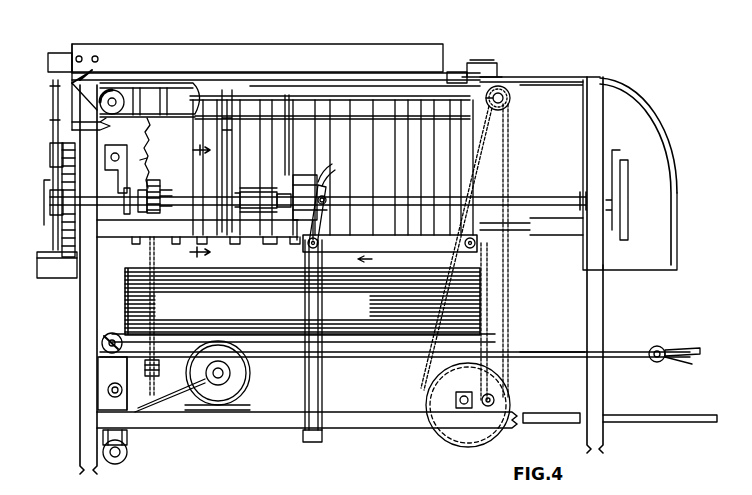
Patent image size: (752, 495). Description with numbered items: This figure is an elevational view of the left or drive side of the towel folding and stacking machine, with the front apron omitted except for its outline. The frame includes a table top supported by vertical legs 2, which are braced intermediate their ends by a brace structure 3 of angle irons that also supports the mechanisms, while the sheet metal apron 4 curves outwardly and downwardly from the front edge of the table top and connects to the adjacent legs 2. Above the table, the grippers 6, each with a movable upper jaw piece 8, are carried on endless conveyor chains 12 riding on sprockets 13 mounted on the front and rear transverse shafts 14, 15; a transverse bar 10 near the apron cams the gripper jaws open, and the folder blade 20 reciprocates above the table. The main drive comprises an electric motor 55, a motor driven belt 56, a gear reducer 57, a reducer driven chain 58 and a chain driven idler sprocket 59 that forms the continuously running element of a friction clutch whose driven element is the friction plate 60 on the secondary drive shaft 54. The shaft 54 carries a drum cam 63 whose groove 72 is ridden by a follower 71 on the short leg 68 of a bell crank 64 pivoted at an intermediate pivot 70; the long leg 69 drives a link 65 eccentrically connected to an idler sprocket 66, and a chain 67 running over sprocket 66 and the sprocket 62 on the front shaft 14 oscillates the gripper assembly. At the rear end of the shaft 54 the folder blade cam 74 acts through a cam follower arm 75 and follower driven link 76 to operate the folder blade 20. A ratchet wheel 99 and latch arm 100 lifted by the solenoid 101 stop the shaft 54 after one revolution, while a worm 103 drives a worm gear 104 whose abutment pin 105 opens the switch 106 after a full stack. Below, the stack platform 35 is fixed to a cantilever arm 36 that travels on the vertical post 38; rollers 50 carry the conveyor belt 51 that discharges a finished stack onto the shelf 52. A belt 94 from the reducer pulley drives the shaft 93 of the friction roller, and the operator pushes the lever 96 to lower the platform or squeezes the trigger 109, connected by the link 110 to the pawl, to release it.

The vertical legs 2 is at (603, 378).
The brace structure 3 is at (378, 428).
The sheet metal apron 4 is at (655, 112).
The grippers 6 is at (455, 70).
The upper jaw piece 8 is at (198, 199).
The transverse bar 10 is at (488, 63).
The endless conveyor chains 12 is at (150, 88).
The sprockets 13 is at (112, 90).
The front transverse shaft 14 is at (486, 98).
The rear transverse shaft 15 is at (128, 84).
The folder blade 20 is at (324, 70).
The stack platform 35 is at (362, 334).
The cantilever arm 36 is at (323, 385).
The vertical post 38 is at (314, 442).
The rollers 50 is at (102, 343).
The conveyor belt 51 is at (362, 358).
The work discharge shelf 52 is at (640, 422).
The secondary drive shaft 54 is at (390, 195).
The electric motor 55 is at (250, 373).
The motor driven belt 56 is at (160, 396).
The gear reducer 57 is at (98, 375).
The reducer driven chain 58 is at (158, 312).
The idler sprocket 59 is at (162, 186).
The friction plate 60 is at (162, 198).
The sprocket 62 is at (507, 106).
The drum cam 63 is at (298, 178).
The bell crank 64 is at (390, 252).
The link 65 is at (479, 295).
The idler sprocket 66 is at (463, 445).
The chain 67 is at (430, 290).
The short leg 68 is at (328, 210).
The long leg 69 is at (446, 245).
The intermediate pivot 70 is at (312, 250).
The follower 71 is at (330, 192).
The drum cam groove 72 is at (330, 168).
The folder blade cam 74 is at (50, 218).
The cam follower arm 75 is at (50, 178).
The follower driven link 76 is at (53, 113).
The shaft 93 is at (118, 462).
The pulley driven belt 94 is at (130, 440).
The lever 96 is at (666, 348).
The ratchet wheel 99 is at (275, 198).
The latch arm 100 is at (256, 190).
The solenoid 101 is at (236, 90).
The worm 103 is at (114, 195).
The worm gear 104 is at (149, 136).
The abutment pin 105 is at (148, 158).
The switch 106 is at (110, 128).
The trigger 109 is at (688, 362).
The link 110 is at (546, 358).